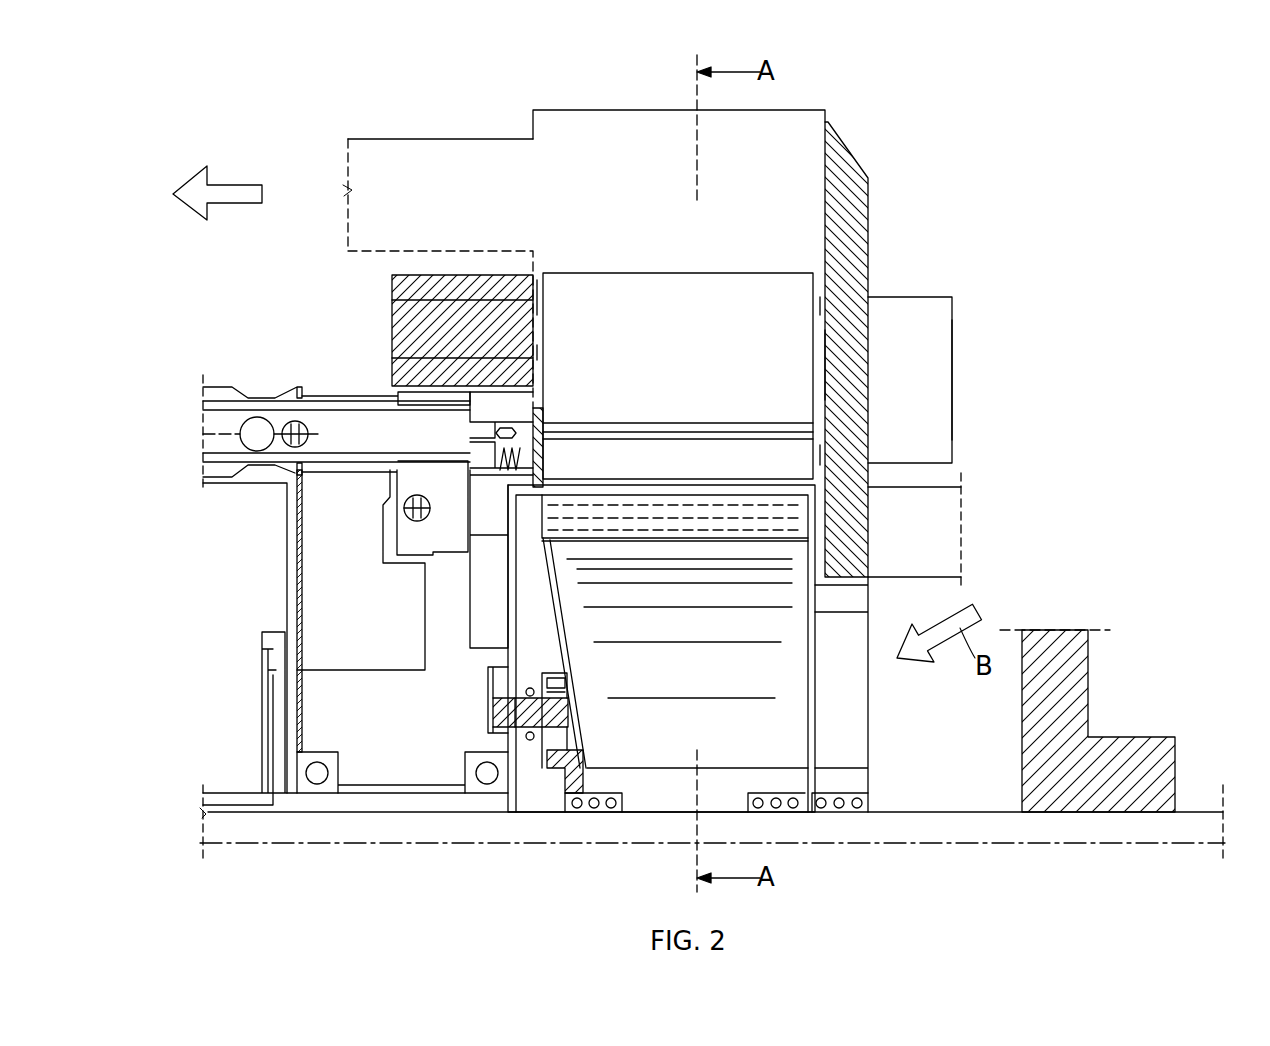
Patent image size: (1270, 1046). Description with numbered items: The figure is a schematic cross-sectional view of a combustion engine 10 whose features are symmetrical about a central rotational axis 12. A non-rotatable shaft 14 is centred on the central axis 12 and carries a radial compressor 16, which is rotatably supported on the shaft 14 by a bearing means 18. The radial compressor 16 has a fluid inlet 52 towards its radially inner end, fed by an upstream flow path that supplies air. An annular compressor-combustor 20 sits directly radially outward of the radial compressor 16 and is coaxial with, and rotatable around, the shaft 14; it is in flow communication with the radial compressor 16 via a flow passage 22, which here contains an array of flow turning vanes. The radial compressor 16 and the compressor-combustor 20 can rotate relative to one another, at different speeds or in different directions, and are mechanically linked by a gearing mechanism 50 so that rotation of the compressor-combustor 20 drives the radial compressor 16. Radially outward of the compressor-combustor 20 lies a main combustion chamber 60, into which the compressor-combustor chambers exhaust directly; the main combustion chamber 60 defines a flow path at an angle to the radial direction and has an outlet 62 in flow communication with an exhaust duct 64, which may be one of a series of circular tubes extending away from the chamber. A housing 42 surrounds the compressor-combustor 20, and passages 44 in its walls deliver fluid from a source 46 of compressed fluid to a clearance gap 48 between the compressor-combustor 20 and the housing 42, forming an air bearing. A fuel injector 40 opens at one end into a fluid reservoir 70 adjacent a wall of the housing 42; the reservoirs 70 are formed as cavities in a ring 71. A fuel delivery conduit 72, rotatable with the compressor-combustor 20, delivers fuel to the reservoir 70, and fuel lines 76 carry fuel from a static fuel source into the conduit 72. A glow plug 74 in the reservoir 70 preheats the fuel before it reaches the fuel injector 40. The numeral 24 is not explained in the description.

The combustion engine 10 is at (224, 108).
The central rotational axis 12 is at (1153, 845).
The shaft 14 is at (945, 832).
The radial compressor 16 is at (793, 668).
The bearing means 18 is at (777, 812).
The compressor-combustor 20 is at (797, 290).
The flow passage 22 is at (797, 508).
The sheet tray 24 is at (797, 522).
The fuel injector 40 is at (763, 428).
The housing 42 is at (862, 196).
The passages 44 is at (952, 325).
The source of compressed fluid 46 is at (952, 388).
The clearance gap 48 is at (822, 348).
The gearing mechanism 50 is at (568, 712).
The fluid inlet 52 is at (855, 735).
The main combustion chamber 60 is at (612, 122).
The outlet 62 is at (517, 162).
The exhaust duct 64 is at (392, 153).
The fluid reservoir 70 is at (522, 425).
The ring 71 is at (485, 406).
The fuel delivery conduit 72 is at (337, 445).
The glow plug 74 is at (503, 470).
The fuel lines 76 is at (232, 483).